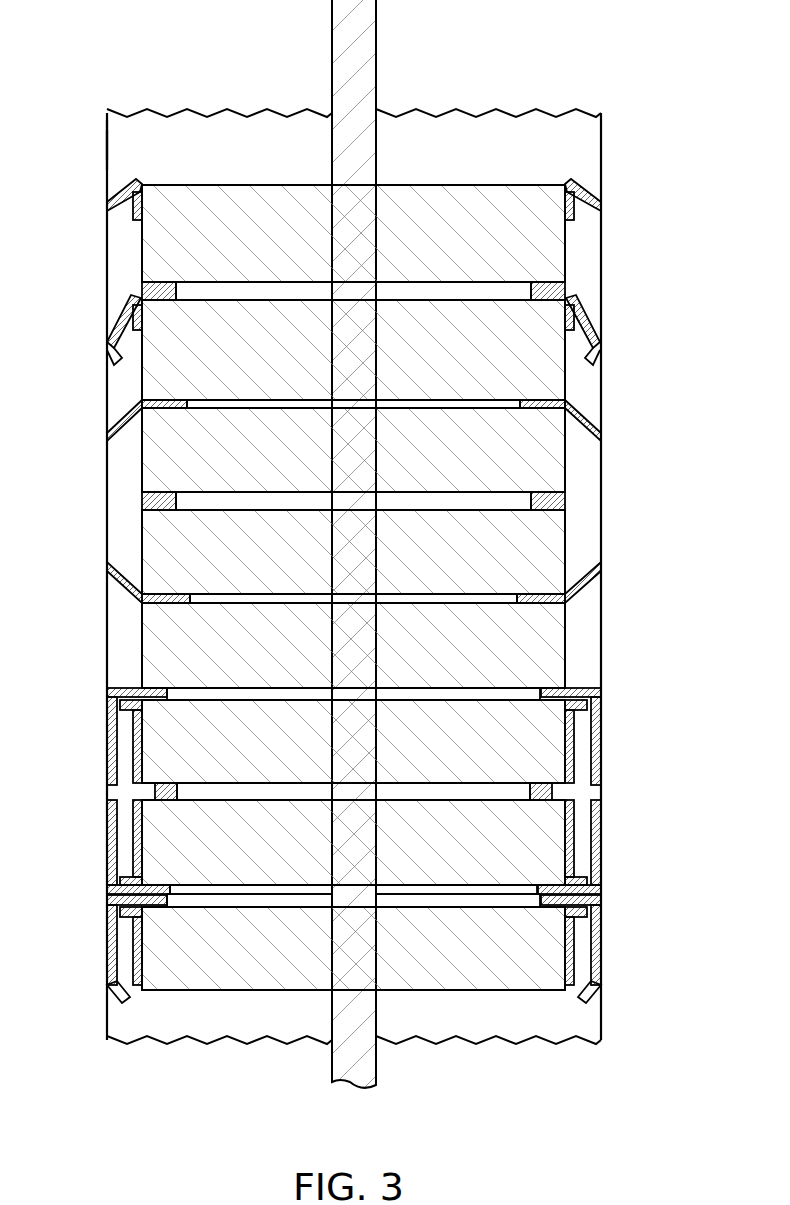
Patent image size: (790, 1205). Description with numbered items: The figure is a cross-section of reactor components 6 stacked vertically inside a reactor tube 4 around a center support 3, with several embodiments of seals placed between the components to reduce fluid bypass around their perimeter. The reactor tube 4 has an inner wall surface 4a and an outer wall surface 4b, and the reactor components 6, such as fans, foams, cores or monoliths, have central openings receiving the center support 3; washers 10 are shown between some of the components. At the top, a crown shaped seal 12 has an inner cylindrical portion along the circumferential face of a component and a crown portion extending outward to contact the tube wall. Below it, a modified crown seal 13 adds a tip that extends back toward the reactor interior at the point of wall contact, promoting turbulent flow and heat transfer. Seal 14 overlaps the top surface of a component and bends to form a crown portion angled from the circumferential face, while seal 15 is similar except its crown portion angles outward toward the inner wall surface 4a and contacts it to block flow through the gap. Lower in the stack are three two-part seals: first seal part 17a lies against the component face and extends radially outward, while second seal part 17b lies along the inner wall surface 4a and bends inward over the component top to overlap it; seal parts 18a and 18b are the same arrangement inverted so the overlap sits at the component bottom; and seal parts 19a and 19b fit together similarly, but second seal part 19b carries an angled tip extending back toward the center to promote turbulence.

The center support 3 is at (366, 30).
The reactor tube 4 is at (601, 140).
The inner wall surface 4a is at (107, 145).
The outer wall surface 4b is at (106, 140).
The reactor component 6 is at (146, 639).
The washer 10 is at (560, 290).
The crown shaped seal 12 is at (588, 196).
The modified crown seal 13 is at (590, 326).
The seal 14 is at (586, 415).
The seal 15 is at (122, 582).
The first seal part 17a is at (572, 722).
The second seal part 17b is at (598, 757).
The first seal part 18a is at (572, 822).
The second seal part 18b is at (598, 857).
The first seal part 19a is at (572, 925).
The second seal part 19b is at (598, 960).